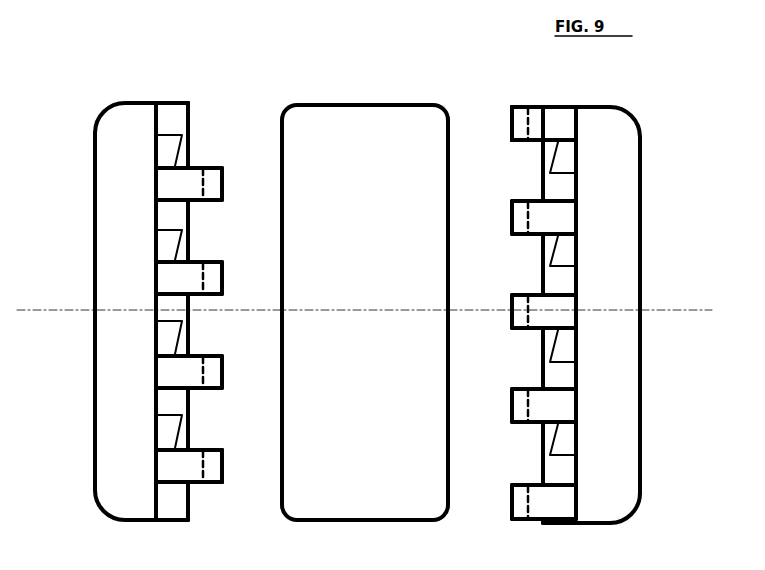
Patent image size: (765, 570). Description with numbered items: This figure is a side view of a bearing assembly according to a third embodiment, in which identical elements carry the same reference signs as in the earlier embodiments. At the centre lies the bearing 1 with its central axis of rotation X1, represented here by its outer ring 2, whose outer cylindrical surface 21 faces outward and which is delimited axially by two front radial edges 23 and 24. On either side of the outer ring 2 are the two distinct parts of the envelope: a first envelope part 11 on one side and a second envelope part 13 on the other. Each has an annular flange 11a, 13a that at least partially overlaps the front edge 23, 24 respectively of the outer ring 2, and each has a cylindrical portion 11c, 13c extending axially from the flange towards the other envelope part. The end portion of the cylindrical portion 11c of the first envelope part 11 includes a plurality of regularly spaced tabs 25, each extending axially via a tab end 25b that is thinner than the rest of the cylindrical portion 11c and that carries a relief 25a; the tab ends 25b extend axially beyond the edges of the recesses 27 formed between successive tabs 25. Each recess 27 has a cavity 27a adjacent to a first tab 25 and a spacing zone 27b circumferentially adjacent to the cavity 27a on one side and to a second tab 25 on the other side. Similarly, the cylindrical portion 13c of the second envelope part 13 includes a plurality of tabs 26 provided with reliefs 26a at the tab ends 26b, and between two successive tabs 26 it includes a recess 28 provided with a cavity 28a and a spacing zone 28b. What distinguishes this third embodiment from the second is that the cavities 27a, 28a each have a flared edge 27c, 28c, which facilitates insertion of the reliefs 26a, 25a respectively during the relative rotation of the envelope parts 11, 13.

The bearing 1 is at (368, 97).
The outer ring 2 is at (398, 102).
The outer cylindrical surface 21 is at (327, 107).
The front radial edge 23 is at (452, 145).
The front radial edge 24 is at (279, 142).
The first envelope part 11 is at (638, 113).
The annular flange 11a is at (643, 249).
The cylindrical portion 11c is at (630, 177).
The second envelope part 13 is at (98, 108).
The annular flange 13a is at (81, 247).
The cylindrical portion 13c is at (91, 176).
The tabs 25 is at (545, 113).
The relief 25a is at (515, 113).
The tab end 25b is at (505, 133).
The tabs 26 is at (178, 478).
The reliefs 26a is at (213, 482).
The tab ends 26b is at (224, 462).
The recess 27 is at (540, 362).
The cavity 27a is at (547, 446).
The spacing zone 27b is at (562, 479).
The flared edge 27c is at (577, 366).
The recess 28 is at (193, 412).
The cavity 28a is at (190, 135).
The spacing zone 28b is at (163, 108).
The flared edge 28c is at (165, 413).
The central axis of rotation X1 is at (365, 303).